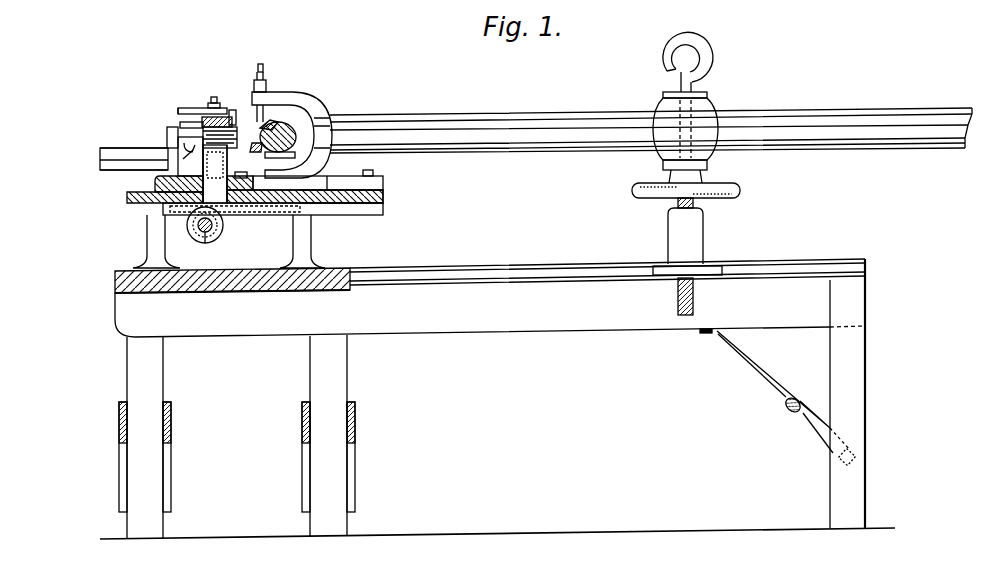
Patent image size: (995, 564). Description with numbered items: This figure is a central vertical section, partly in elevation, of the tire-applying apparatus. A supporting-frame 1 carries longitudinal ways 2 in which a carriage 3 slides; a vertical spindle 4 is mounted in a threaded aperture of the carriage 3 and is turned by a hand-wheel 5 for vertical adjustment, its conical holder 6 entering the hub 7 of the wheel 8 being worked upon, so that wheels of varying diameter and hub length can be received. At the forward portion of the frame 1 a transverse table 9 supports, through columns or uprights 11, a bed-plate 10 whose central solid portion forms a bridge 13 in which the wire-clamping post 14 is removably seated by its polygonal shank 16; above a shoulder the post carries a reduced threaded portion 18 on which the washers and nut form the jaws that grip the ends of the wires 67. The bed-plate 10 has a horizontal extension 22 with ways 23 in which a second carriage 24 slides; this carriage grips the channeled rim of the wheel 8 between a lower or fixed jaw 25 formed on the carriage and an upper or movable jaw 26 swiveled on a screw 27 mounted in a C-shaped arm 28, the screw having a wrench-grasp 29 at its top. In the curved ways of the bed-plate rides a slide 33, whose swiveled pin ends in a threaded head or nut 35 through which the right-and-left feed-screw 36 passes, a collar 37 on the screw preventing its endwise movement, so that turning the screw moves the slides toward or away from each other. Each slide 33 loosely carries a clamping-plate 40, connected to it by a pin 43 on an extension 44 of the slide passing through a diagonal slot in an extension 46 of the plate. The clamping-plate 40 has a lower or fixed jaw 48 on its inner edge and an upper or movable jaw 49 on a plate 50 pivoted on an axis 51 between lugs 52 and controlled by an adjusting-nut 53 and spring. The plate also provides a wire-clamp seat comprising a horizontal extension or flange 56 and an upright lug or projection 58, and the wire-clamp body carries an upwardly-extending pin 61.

The supporting-frame 1 is at (305, 356).
The longitudinal ways 2 is at (517, 266).
The carriage 3 is at (703, 238).
The vertical spindle 4 is at (695, 300).
The hand-wheel 5 is at (741, 192).
The conical holder 6 is at (700, 180).
The hub 7 is at (712, 108).
The wheel 8 is at (779, 118).
The transverse table 9 is at (218, 290).
The bed-plate 10 is at (127, 198).
The columns or uprights 11 is at (312, 237).
The bridge 13 is at (198, 160).
The wire-clamping post 14 is at (215, 174).
The shank 16 is at (215, 174).
The reduced threaded portion 18 is at (214, 108).
The horizontal extension 22 is at (384, 191).
The ways 23 is at (384, 174).
The carriage 24 is at (276, 205).
The lower or fixed jaw 25 is at (240, 169).
The upper or movable jaw 26 is at (256, 114).
The screw 27 is at (267, 86).
The C-shaped arm 28 is at (313, 99).
The wrench-grasp 29 is at (262, 72).
The slide 33 is at (155, 179).
The threaded head or nut 35 is at (222, 234).
The feed-screw 36 is at (197, 233).
The collar 37 is at (212, 246).
The clamping-plate 40 is at (135, 149).
The pin 43 is at (334, 133).
The extension 44 is at (100, 163).
The extension 46 is at (100, 152).
The lower or fixed jaw 48 is at (249, 153).
The upper or movable jaw 49 is at (268, 120).
The plate 50 is at (232, 110).
The axis 51 is at (192, 125).
The lugs 52 is at (210, 108).
The adjusting-nut 53 is at (195, 113).
The horizontal extension or flange 56 is at (176, 160).
The upright lug or projection 58 is at (170, 134).
The pin 61 is at (269, 140).
The wires 67 is at (227, 137).